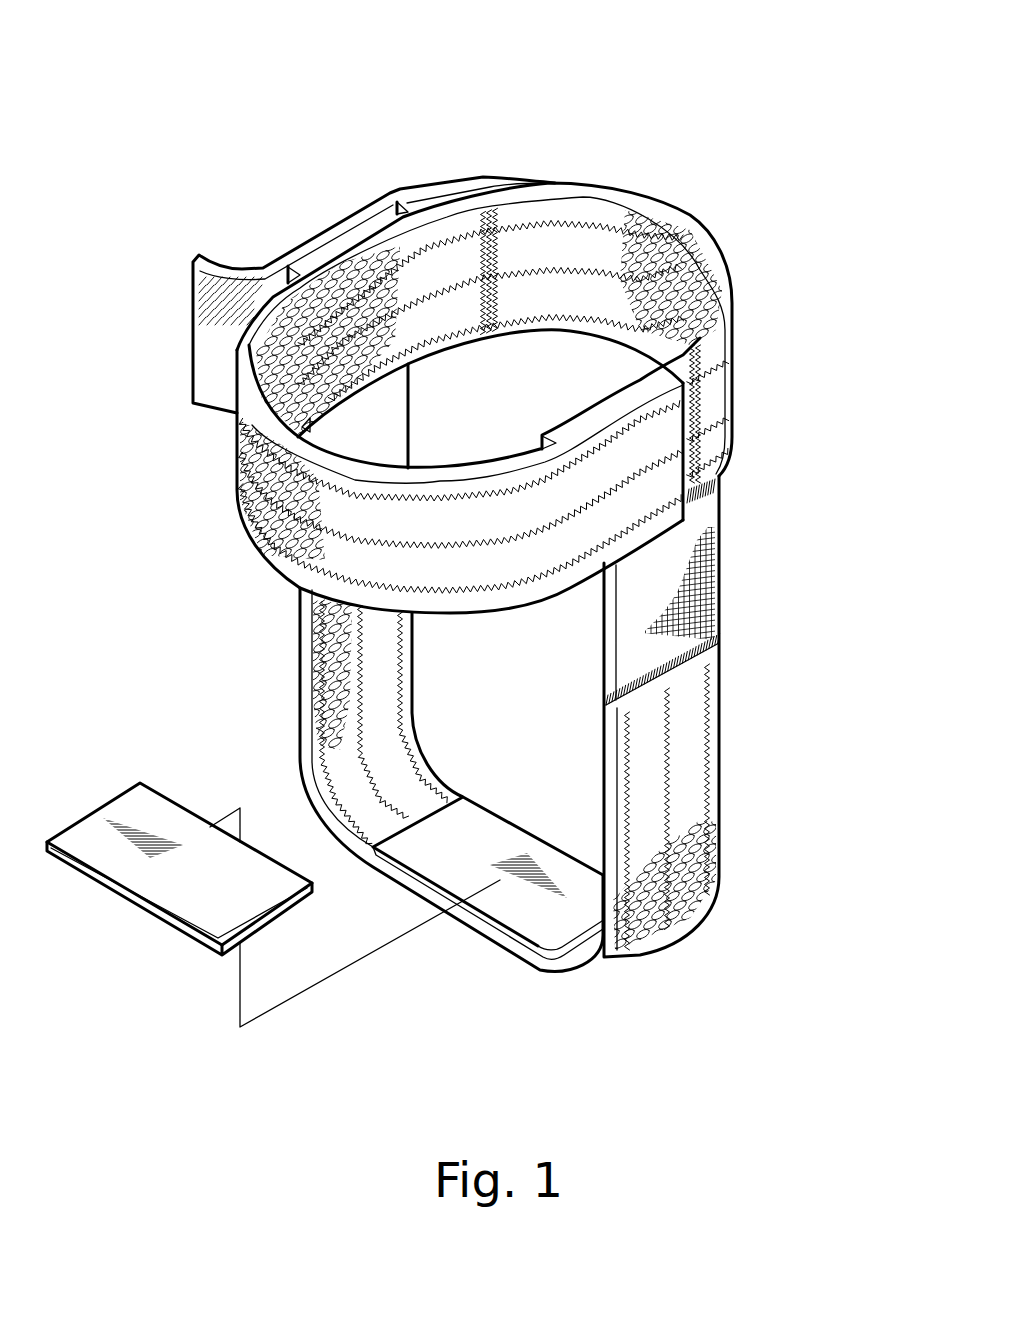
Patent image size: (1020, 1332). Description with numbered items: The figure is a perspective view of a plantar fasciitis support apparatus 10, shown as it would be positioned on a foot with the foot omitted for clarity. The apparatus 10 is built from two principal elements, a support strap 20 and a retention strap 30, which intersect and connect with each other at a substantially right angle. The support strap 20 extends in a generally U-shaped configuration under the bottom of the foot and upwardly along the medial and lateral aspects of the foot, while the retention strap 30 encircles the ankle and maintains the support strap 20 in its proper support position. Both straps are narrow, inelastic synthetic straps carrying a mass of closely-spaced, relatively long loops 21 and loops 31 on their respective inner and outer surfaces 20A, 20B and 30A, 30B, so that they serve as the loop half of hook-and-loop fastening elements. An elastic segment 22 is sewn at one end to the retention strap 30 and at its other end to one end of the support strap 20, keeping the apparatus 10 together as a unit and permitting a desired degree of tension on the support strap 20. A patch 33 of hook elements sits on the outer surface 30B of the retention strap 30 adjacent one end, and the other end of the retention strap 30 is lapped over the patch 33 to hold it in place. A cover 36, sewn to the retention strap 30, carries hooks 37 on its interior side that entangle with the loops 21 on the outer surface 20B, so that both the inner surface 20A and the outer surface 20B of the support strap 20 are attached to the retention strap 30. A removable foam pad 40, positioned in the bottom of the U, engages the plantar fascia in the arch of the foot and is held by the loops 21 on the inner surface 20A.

The plantar fasciitis support apparatus 10 is at (327, 123).
The support strap 20 is at (731, 733).
The inner surface of the support strap 20A is at (383, 707).
The outer surface of the support strap 20B is at (690, 724).
The loops 21 is at (330, 667).
The elastic segment 22 is at (700, 575).
The retention strap 30 is at (770, 302).
The inner surface of the retention strap 30A is at (563, 240).
The outer surface of the retention strap 30B is at (737, 377).
The loops 31 is at (254, 549).
The patch of hook elements 33 is at (736, 448).
The cover 36 is at (238, 266).
The hooks 37 is at (196, 320).
The pad 40 is at (182, 888).